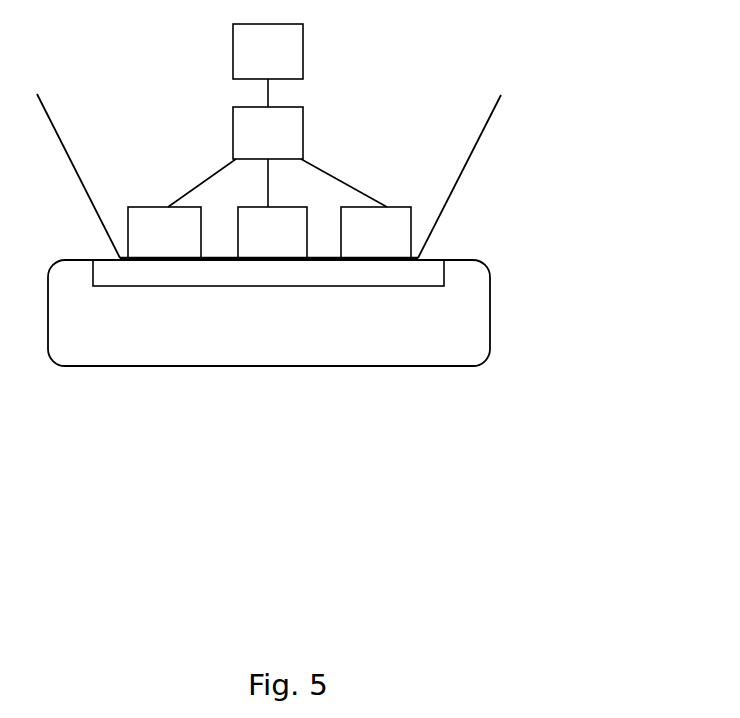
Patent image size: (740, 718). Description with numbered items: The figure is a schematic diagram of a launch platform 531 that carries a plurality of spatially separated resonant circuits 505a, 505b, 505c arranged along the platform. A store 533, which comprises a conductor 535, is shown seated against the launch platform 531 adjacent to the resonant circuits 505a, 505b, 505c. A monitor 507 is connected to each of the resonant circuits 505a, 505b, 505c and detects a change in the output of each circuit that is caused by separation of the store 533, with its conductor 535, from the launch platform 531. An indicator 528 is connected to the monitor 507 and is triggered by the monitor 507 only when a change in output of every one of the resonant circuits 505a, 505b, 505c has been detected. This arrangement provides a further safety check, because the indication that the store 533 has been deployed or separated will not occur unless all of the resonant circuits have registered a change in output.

The indicator 528 is at (298, 65).
The monitor 507 is at (298, 149).
The resonant circuit 505a is at (198, 243).
The resonant circuit 505b is at (305, 243).
The resonant circuit 505c is at (408, 243).
The launch platform 531 is at (470, 160).
The store 533 is at (445, 330).
The conductor 535 is at (368, 286).